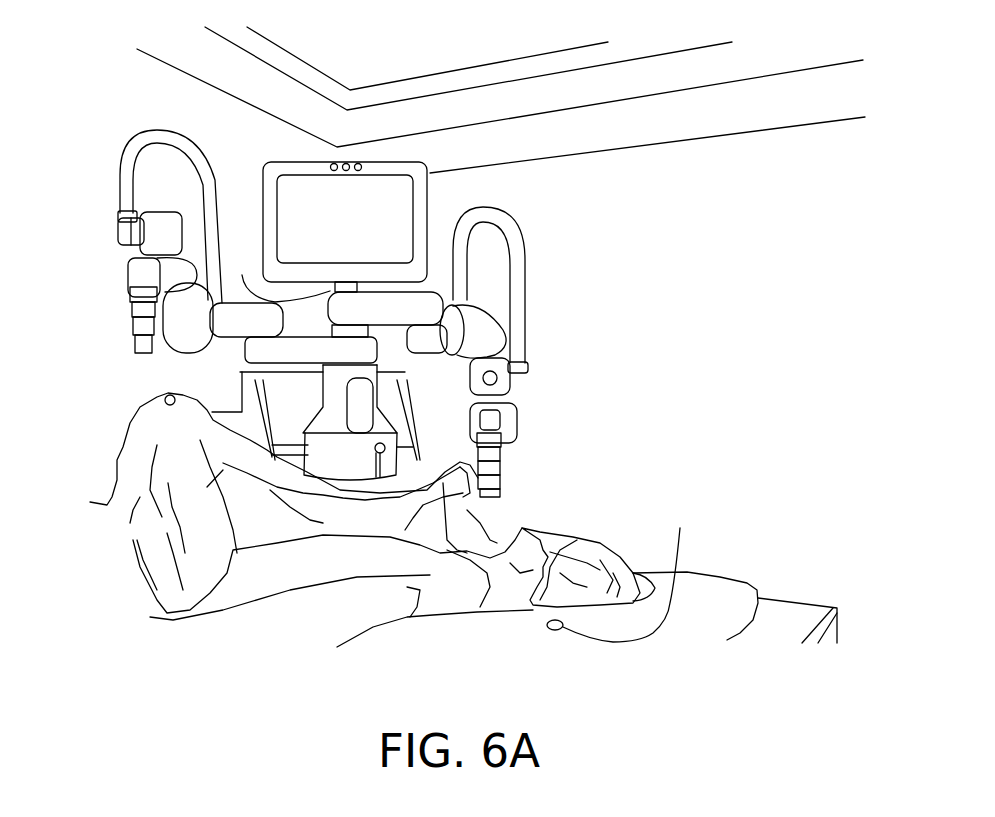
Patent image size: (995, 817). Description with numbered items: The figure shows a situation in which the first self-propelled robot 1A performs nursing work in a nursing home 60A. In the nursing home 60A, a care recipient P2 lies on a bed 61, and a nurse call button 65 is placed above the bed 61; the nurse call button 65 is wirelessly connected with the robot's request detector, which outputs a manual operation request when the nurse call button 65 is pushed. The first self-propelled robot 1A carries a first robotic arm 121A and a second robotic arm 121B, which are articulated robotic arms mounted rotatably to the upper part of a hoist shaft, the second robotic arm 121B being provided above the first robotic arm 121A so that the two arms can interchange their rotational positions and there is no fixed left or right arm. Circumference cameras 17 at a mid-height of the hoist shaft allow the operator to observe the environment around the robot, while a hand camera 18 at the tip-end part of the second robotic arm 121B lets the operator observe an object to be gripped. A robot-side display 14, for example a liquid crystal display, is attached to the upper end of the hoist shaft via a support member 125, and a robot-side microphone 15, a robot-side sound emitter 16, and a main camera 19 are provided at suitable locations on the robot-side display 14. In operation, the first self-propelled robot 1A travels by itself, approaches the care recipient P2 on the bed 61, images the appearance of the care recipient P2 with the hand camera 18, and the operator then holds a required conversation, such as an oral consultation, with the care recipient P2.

The nursing home 60A is at (398, 29).
The robot-side display 14 is at (404, 162).
The robot-side microphone 15 is at (333, 163).
The main camera 19 is at (346, 163).
The robot-side sound emitter 16 is at (359, 163).
The first self-propelled robot 1A is at (506, 190).
The circumference cameras 17 is at (385, 448).
The support member 125 is at (245, 283).
The first robotic arm 121A is at (126, 259).
The second robotic arm 121B is at (546, 313).
The hand camera 18 is at (518, 417).
The care recipient P2 is at (553, 533).
The nurse call button 65 is at (620, 574).
The bed 61 is at (733, 577).